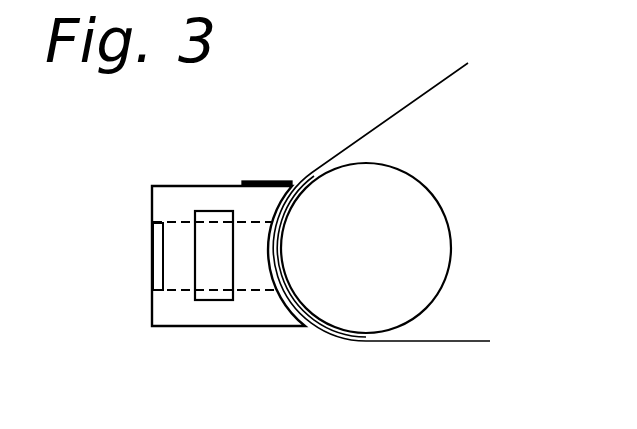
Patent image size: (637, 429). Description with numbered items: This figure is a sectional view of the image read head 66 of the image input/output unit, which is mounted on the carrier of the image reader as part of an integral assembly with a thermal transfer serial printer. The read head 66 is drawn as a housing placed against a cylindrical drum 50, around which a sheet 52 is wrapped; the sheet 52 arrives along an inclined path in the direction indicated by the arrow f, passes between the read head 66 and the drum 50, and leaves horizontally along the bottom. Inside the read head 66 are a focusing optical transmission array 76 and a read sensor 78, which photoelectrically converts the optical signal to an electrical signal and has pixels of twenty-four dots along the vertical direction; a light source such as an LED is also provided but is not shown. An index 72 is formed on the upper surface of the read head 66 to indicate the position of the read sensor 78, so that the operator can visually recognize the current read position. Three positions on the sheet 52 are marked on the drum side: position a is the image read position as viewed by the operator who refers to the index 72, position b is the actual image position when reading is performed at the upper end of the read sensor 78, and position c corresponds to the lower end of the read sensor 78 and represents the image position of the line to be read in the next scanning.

The drum 50 is at (450, 223).
The sheet / belt 52 is at (432, 88).
The image read head 66 is at (168, 337).
The index 72 is at (268, 181).
The focusing optical transmission array 76 is at (220, 302).
The read sensor 78 is at (152, 267).
The position a is at (297, 187).
The position b is at (282, 223).
The position c is at (287, 288).
The feed direction f is at (426, 40).